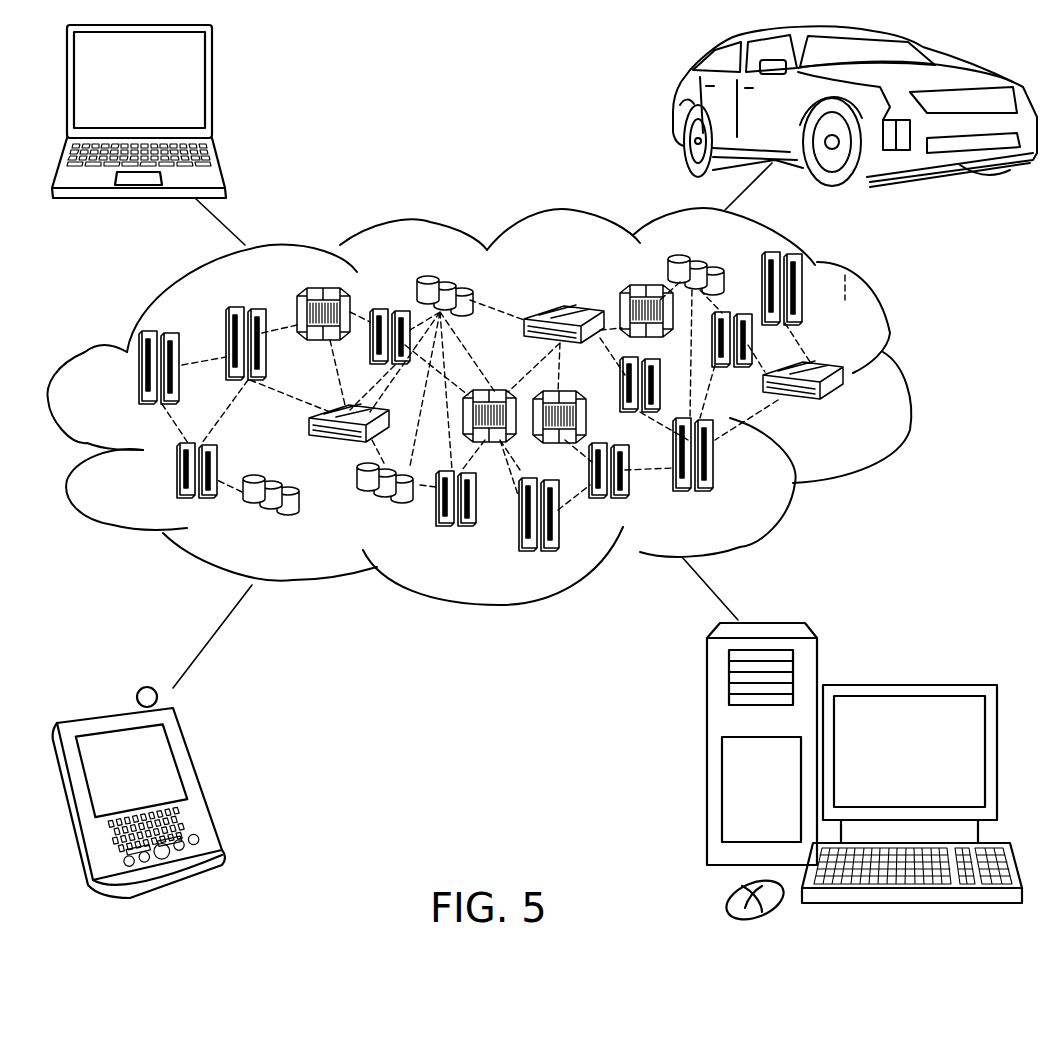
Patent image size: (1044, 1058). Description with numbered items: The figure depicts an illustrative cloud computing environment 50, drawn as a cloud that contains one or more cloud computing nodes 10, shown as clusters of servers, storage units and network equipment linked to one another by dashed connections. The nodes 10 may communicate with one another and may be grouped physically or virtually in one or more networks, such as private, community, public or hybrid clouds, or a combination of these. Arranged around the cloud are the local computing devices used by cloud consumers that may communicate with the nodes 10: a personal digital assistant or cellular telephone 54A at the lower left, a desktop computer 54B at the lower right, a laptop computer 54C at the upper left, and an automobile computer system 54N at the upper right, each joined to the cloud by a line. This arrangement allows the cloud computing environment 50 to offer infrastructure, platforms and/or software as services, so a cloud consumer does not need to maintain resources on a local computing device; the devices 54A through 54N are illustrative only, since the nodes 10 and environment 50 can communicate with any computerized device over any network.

The cloud computing node 10 is at (849, 410).
The cloud computing environment 50 is at (905, 374).
The personal digital assistant (PDA) or cellular telephone 54A is at (200, 778).
The desktop computer 54B is at (907, 685).
The laptop computer 54C is at (212, 90).
The automobile computer system 54N is at (673, 105).